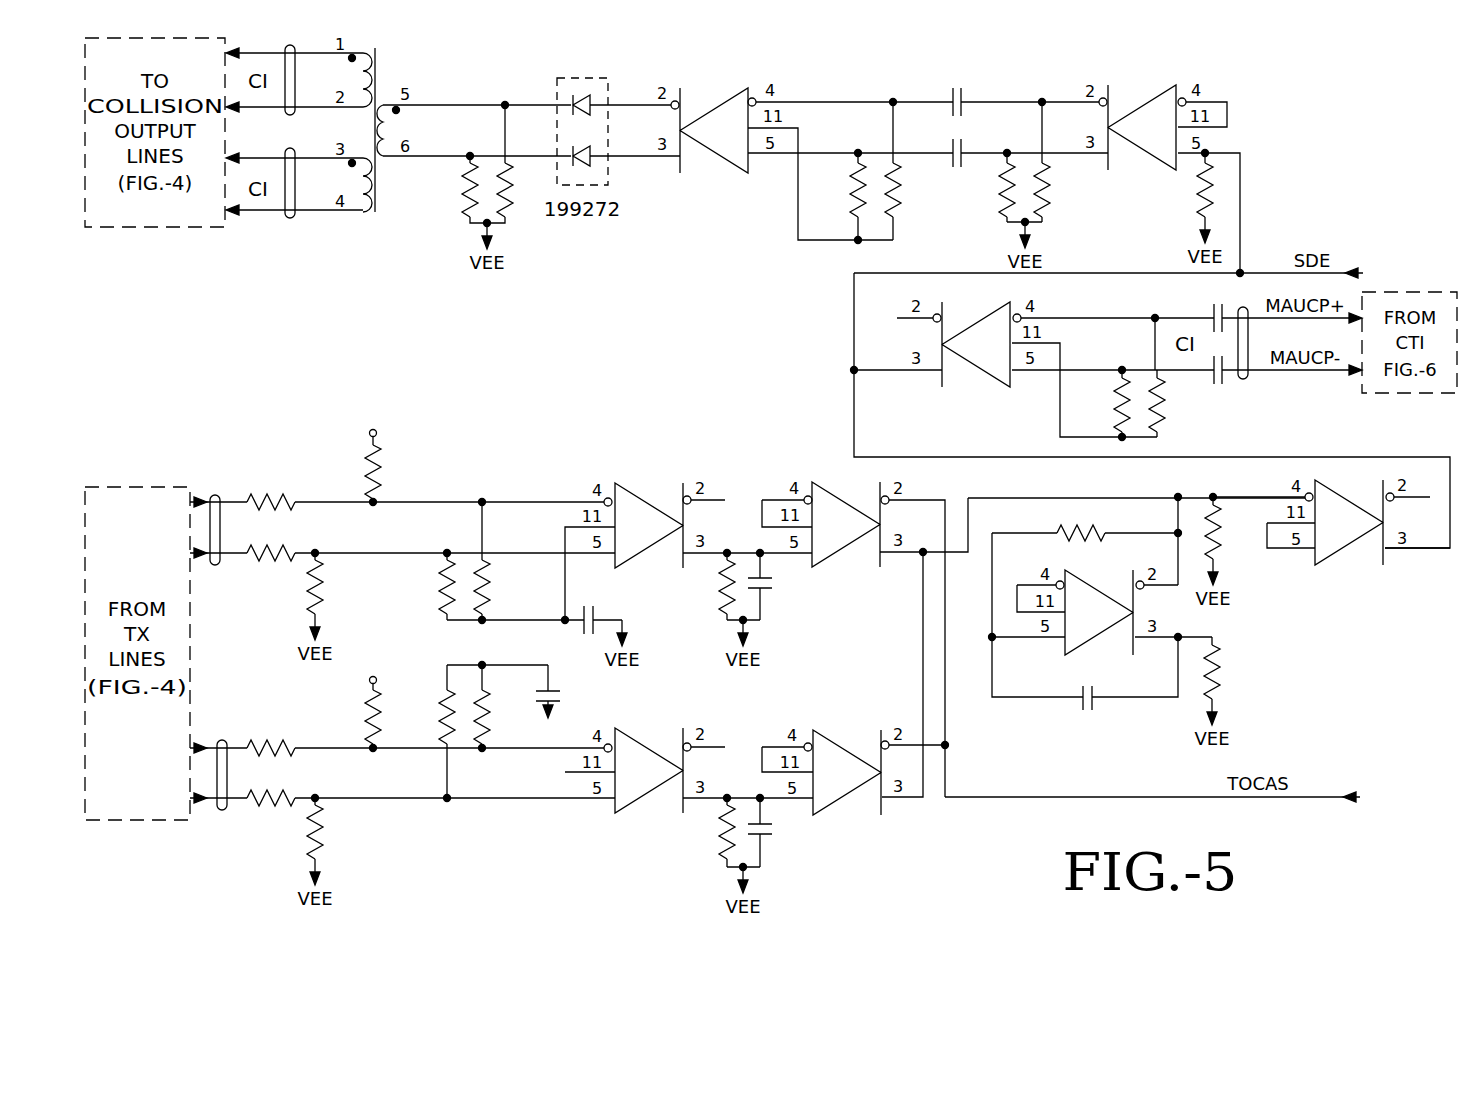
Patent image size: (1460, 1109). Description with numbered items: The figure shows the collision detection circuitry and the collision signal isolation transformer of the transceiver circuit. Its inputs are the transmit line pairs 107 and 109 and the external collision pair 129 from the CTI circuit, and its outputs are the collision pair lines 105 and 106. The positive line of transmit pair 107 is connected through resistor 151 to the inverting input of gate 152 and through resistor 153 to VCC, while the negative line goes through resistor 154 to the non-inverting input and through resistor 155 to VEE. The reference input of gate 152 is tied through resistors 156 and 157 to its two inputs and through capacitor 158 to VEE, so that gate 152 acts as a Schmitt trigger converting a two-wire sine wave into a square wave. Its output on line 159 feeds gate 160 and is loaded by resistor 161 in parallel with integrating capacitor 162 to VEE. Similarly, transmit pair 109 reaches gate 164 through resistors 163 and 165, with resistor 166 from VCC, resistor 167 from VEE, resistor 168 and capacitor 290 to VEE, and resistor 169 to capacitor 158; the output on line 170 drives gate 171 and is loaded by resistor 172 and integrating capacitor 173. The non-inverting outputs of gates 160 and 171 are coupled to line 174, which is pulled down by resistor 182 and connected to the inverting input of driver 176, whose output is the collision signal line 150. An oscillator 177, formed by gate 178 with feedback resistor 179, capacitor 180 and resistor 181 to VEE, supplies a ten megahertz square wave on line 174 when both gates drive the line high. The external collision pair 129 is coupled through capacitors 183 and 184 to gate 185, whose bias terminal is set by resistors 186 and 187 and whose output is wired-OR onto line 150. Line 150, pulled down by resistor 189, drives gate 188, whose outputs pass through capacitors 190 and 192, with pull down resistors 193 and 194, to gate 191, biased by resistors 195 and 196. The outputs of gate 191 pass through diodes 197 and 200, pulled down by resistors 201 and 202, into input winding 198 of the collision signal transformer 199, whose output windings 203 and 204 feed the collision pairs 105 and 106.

The collision pair line 105 is at (290, 115).
The collision pair line 106 is at (290, 218).
The transmit line pair 107 is at (218, 493).
The transmit line pair 109 is at (222, 738).
The collision pair 129 is at (1245, 378).
The collision signal line 150 is at (1368, 455).
The resistor 151 is at (280, 494).
The gate 152 is at (645, 505).
The resistor 153 is at (383, 480).
The resistor 154 is at (275, 563).
The resistor 155 is at (322, 585).
The resistor 156 is at (490, 586).
The resistor 157 is at (440, 586).
The capacitor 158 is at (600, 606).
The line 159 is at (717, 474).
The gate 160 is at (836, 492).
The resistor 161 is at (722, 612).
The integrating capacitor 162 is at (801, 586).
The resistor 163 is at (268, 745).
The gate 164 is at (645, 738).
The resistor 165 is at (275, 808).
The resistor 166 is at (366, 708).
The resistor 167 is at (325, 830).
The resistor 168 is at (440, 715).
The resistor 169 is at (492, 700).
The line 170 is at (740, 790).
The gate 171 is at (836, 760).
The resistor 172 is at (718, 850).
The integrating capacitor 173 is at (775, 838).
The line 174 is at (990, 504).
The driver 176 is at (1333, 495).
The oscillator 177 is at (1232, 628).
The gate 178 is at (1086, 582).
The resistor 179 is at (1100, 527).
The capacitor 180 is at (1085, 712).
The resistor 181 is at (1224, 670).
The pull down resistor 182 is at (1224, 556).
The capacitor 183 is at (1213, 305).
The capacitor 184 is at (1218, 386).
The gate 185 is at (974, 326).
The resistor 186 is at (1115, 408).
The resistor 187 is at (1165, 415).
The gate 188 is at (1142, 104).
The pull down resistor 189 is at (1196, 213).
The capacitor 190 is at (962, 86).
The gate 191 is at (713, 108).
The capacitor 192 is at (962, 138).
The pull down resistor 193 is at (1000, 205).
The pull down resistor 194 is at (1050, 200).
The resistor 195 is at (850, 183).
The resistor 196 is at (900, 190).
The diode 197 is at (588, 84).
The input winding 198 is at (389, 100).
The collision signal transformer 199 is at (382, 163).
The diode 200 is at (596, 165).
The resistor 201 is at (465, 190).
The resistor 202 is at (512, 205).
The output winding 203 is at (390, 52).
The output winding 204 is at (363, 212).
The capacitor 290 is at (565, 697).